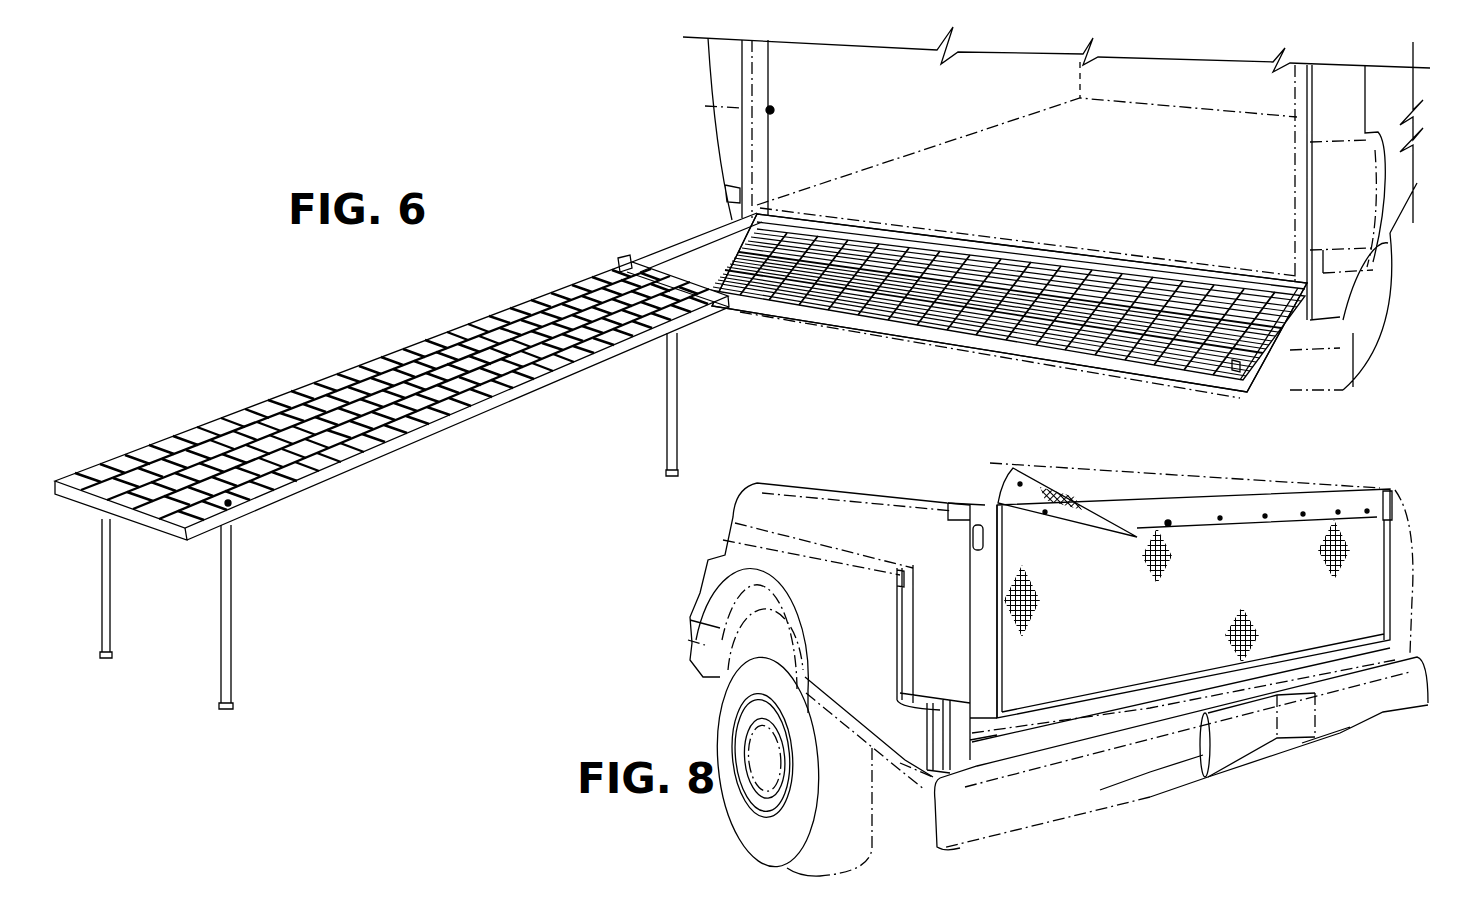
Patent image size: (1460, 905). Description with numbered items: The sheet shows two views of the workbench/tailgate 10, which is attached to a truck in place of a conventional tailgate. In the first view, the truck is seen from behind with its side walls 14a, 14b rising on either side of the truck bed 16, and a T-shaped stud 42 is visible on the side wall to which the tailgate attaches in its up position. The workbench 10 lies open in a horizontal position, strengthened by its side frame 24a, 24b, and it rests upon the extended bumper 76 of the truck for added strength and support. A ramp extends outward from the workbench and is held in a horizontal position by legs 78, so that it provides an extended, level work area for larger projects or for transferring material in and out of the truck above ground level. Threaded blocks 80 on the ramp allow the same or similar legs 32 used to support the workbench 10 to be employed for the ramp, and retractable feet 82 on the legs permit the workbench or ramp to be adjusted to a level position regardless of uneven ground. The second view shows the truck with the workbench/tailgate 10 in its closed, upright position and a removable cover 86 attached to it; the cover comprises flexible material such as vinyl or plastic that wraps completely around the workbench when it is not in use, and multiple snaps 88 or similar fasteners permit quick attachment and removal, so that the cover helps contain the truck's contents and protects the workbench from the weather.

In FIG. 8, the workbench/tailgate 10 is at (985, 503).
In FIG. 6, the side wall 14a is at (708, 70).
In FIG. 6, the side wall 14b is at (1295, 118).
In FIG. 6, the truck bed 16 is at (990, 136).
In FIG. 6, the side frame 24a is at (682, 248).
In FIG. 6, the side frame 24b is at (1232, 372).
In FIG. 6, the legs 32 is at (678, 393).
In FIG. 6, the T-shaped stud 42 is at (772, 110).
In FIG. 6, the extended bumper 76 is at (1342, 392).
In FIG. 6, the legs 78 is at (110, 585).
In FIG. 6, the threaded blocks 80 is at (112, 462).
In FIG. 6, the retractable feet 82 is at (112, 655).
In FIG. 8, the removable cover 86 is at (1120, 497).
In FIG. 8, the snaps 88 is at (1172, 525).